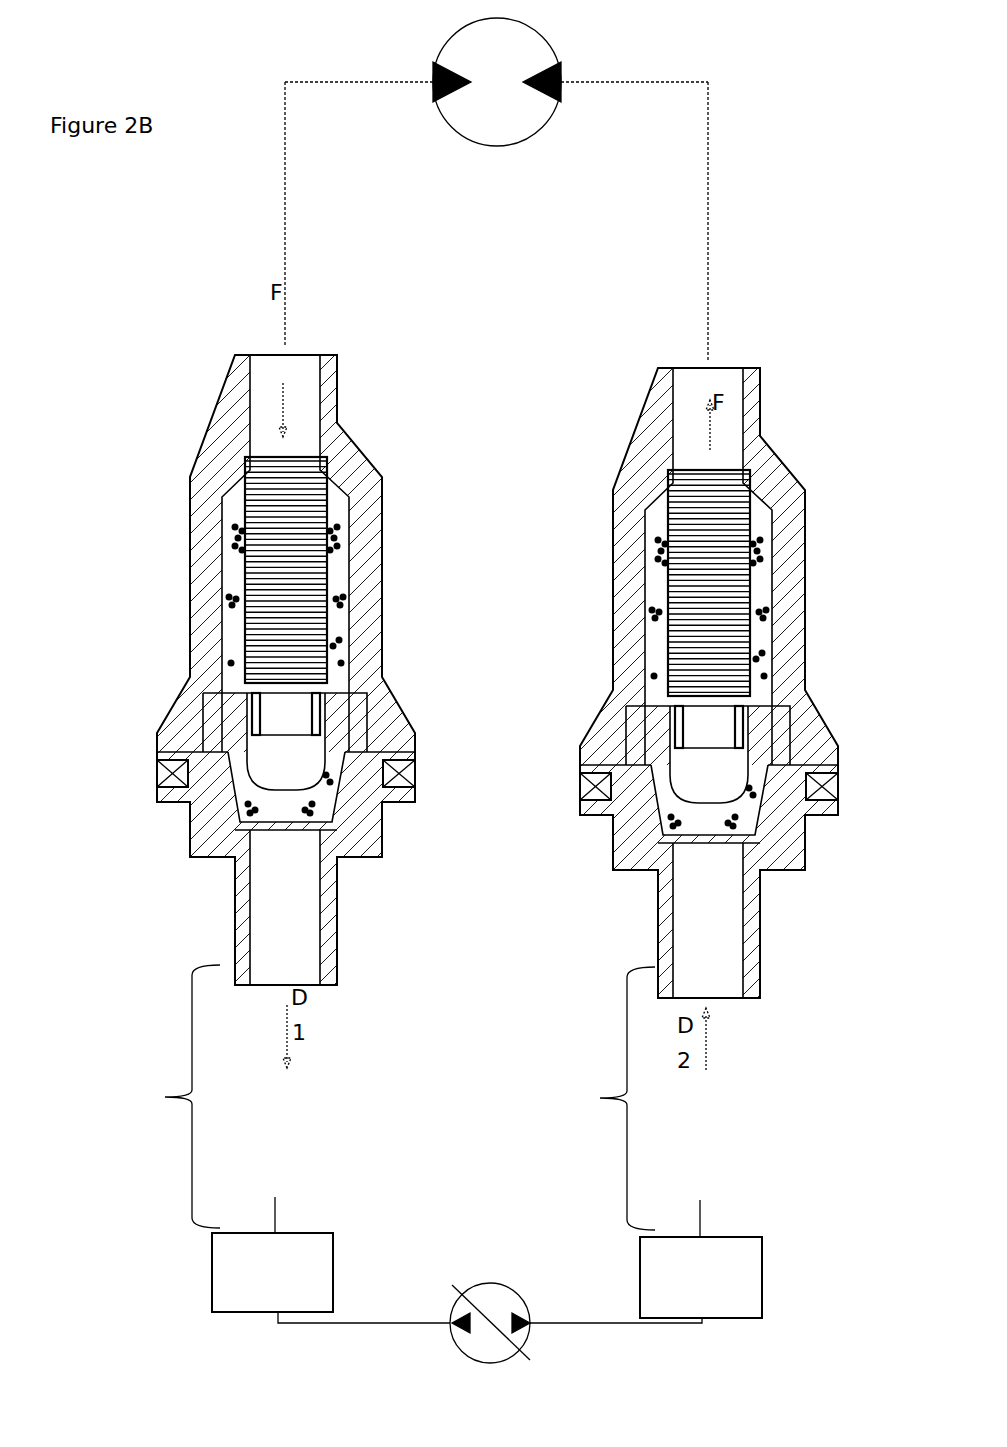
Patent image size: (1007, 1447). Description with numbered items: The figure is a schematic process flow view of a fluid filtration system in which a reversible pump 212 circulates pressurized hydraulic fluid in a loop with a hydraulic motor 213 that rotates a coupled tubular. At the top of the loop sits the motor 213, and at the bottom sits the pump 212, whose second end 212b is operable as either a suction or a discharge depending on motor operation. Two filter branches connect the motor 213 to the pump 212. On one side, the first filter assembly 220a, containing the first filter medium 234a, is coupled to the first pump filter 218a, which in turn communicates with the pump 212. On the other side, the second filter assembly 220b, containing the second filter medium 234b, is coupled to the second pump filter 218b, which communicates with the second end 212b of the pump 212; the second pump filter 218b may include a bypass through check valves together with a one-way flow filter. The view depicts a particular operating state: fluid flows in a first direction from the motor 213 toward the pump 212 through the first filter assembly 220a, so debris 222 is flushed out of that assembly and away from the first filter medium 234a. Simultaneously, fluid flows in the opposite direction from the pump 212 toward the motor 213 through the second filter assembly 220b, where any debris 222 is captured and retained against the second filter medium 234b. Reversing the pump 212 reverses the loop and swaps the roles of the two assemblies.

The motor 213 is at (547, 43).
The first filter assembly 220a is at (192, 552).
The second filter assembly 220b is at (647, 555).
The first filter medium 234a is at (327, 477).
The second filter medium 234b is at (750, 488).
The debris 222 is at (342, 658).
The first pump filter 218a is at (333, 1236).
The second pump filter 218b is at (762, 1300).
The pump 212 is at (480, 1283).
The second end 212b is at (565, 1320).